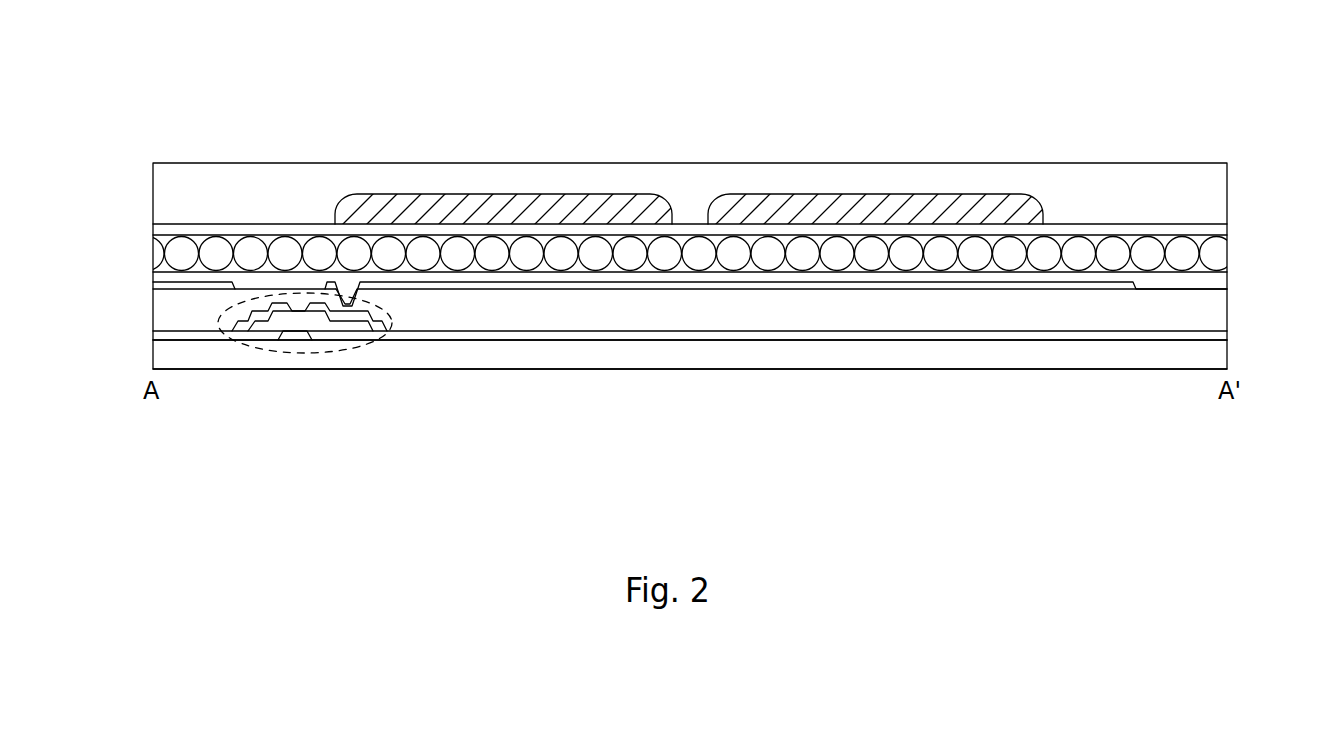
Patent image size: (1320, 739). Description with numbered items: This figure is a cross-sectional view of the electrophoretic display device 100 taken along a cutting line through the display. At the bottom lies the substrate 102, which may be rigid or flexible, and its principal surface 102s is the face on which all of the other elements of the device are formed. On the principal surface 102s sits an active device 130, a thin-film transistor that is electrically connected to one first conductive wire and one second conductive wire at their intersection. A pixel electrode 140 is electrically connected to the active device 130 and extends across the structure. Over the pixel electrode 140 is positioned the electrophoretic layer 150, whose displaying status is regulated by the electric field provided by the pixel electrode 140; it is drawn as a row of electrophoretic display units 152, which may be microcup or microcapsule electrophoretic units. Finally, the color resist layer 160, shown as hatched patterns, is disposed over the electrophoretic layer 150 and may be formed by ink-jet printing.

The electrophoretic display device 100 is at (210, 105).
The substrate 102 is at (465, 357).
The principal surface 102s is at (597, 340).
The active device 130 is at (309, 353).
The pixel electrode 140 is at (803, 283).
The electrophoretic layer 150 is at (1235, 235).
The microcapsule 152 is at (1147, 256).
The color resist layer 160 is at (517, 210).